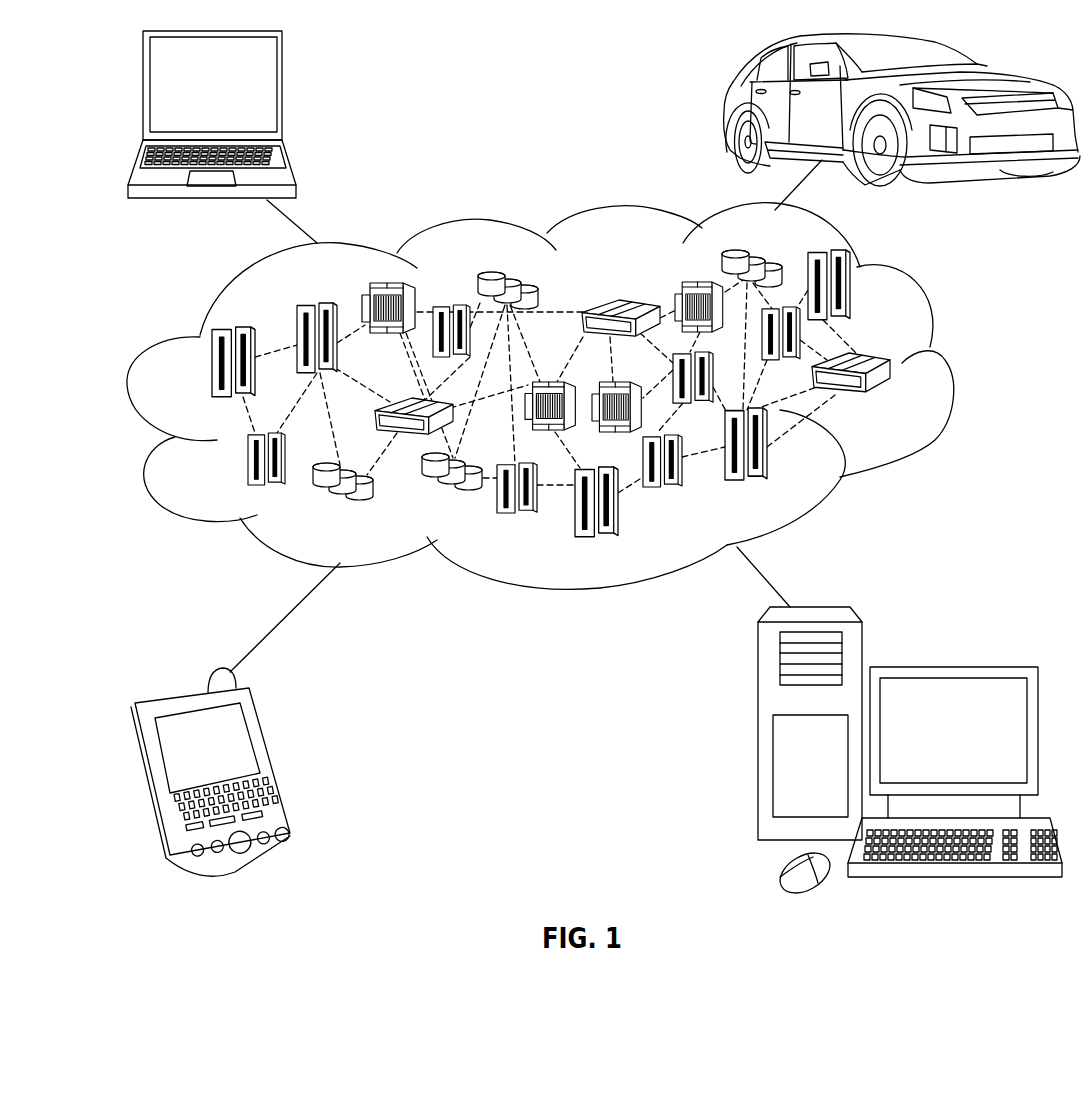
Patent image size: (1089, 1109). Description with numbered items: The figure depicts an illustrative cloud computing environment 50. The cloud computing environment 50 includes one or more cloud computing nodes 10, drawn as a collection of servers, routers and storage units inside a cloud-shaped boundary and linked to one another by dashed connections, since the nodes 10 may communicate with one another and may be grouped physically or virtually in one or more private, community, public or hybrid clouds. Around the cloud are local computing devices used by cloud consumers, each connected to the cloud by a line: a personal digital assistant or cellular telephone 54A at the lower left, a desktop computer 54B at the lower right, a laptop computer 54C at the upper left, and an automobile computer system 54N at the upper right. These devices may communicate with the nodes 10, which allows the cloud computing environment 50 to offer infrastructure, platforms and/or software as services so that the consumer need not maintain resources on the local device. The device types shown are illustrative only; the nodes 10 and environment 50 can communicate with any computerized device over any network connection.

The cloud computing nodes 10 is at (603, 466).
The cloud computing environment 50 is at (952, 371).
The personal digital assistant or cellular telephone 54A is at (272, 762).
The desktop computer 54B is at (952, 665).
The laptop computer 54C is at (282, 93).
The automobile computer system 54N is at (726, 106).